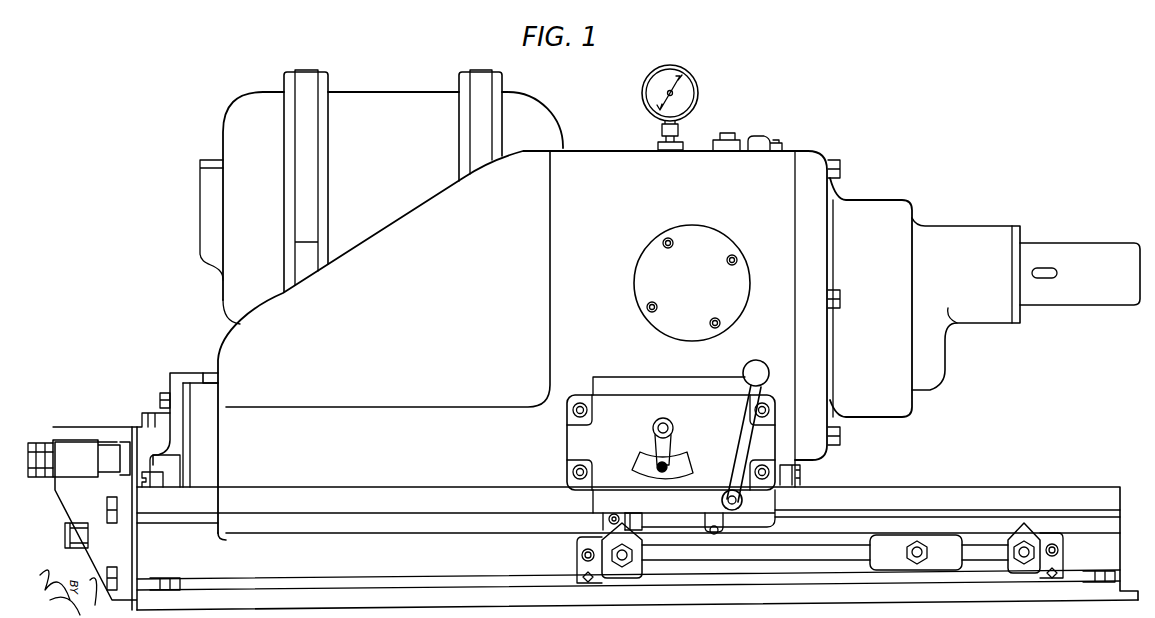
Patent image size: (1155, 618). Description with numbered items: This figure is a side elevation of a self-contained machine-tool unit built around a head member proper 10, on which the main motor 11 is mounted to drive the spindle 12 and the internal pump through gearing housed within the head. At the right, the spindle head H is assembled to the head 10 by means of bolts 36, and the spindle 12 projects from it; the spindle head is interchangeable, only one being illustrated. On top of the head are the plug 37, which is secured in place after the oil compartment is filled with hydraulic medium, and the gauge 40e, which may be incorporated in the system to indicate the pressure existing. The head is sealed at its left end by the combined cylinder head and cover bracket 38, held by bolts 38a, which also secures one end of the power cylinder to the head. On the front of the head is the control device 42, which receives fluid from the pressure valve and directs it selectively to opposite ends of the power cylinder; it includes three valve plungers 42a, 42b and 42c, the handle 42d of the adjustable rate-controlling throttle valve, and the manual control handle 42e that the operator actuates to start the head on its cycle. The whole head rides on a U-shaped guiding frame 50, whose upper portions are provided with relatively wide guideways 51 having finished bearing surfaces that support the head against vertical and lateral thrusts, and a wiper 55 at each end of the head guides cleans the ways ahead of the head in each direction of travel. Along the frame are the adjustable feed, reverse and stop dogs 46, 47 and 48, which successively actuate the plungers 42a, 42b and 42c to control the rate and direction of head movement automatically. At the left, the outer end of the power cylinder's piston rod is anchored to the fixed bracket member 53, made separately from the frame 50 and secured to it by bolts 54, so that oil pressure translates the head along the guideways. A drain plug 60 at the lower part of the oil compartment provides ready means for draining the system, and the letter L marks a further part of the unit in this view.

The head member proper 10 is at (515, 336).
The main motor 11 is at (381, 197).
The spindle 12 is at (1080, 274).
The bolts 36 is at (840, 167).
The plug 37 is at (756, 135).
The cylinder head and cover bracket 38 is at (178, 374).
The bolts 38a is at (162, 400).
The gauge 40e is at (699, 84).
The control device 42 is at (671, 452).
The valve plunger 42a is at (604, 522).
The valve plunger 42b is at (651, 506).
The valve plunger 42c is at (712, 514).
The throttle valve handle 42d is at (672, 441).
The manual control handle 42e is at (738, 453).
The feed dog 46 is at (825, 552).
The reverse dog 47 is at (1012, 528).
The stop dog 48 is at (613, 568).
The guiding frame 50 is at (637, 571).
The guideways 51 is at (212, 491).
The fixed bracket member 53 is at (74, 440).
The bolts 54 is at (114, 578).
The wiper 55 is at (157, 490).
The drain plug 60 is at (65, 533).
The spindle head H is at (925, 297).
The lever L is at (152, 413).